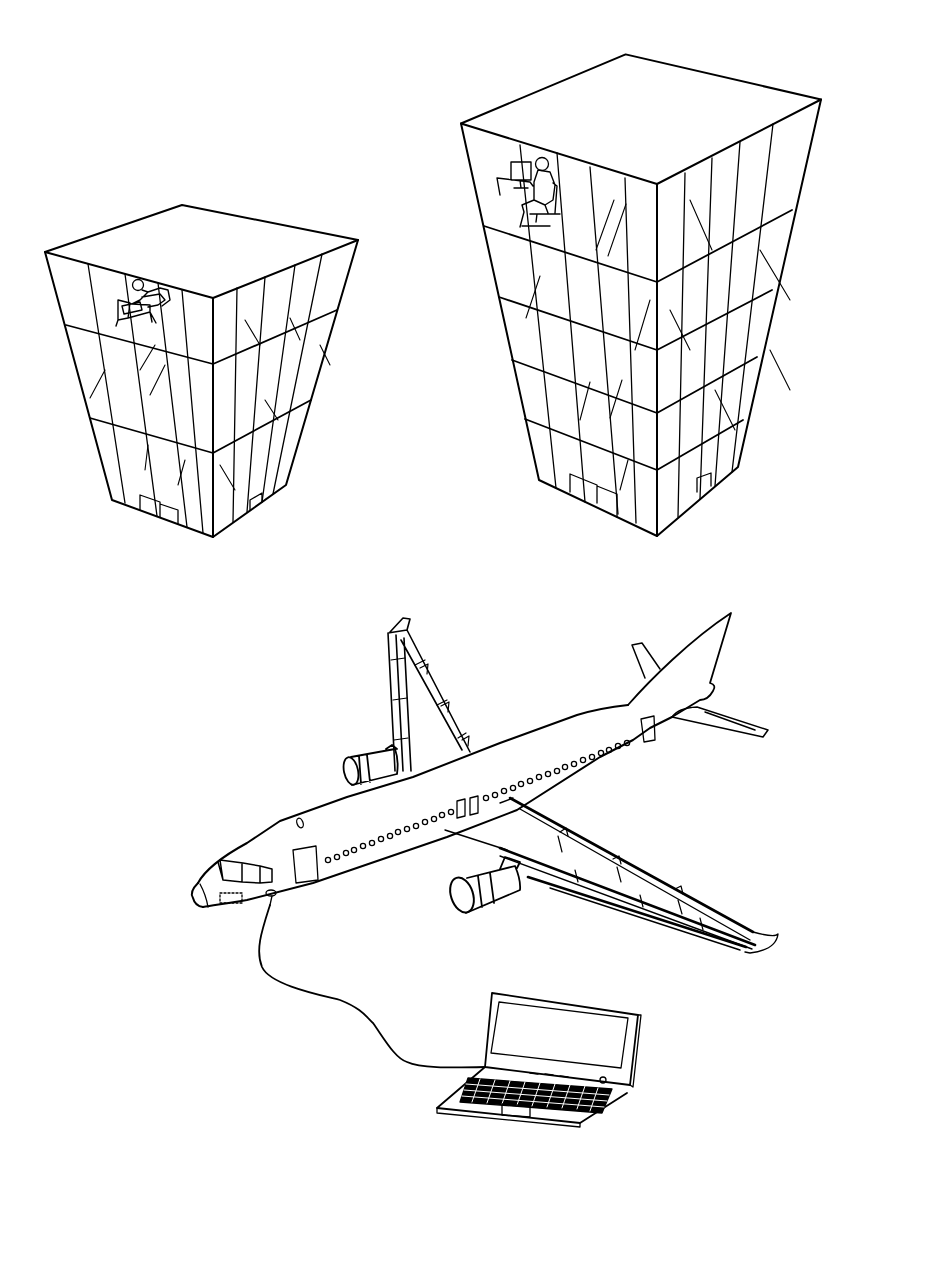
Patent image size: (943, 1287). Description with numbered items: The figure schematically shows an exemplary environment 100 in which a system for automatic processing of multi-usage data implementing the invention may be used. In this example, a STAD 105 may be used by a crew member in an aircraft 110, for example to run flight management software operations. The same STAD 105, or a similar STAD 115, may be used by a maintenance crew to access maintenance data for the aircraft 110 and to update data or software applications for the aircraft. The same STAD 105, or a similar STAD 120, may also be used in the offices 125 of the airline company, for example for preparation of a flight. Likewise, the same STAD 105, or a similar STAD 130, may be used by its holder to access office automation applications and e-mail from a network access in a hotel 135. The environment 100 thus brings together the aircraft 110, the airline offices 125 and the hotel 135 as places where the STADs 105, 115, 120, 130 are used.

The environment 100 is at (292, 84).
The STAD 105 is at (252, 860).
The aircraft 110 is at (577, 713).
The STAD 115 is at (635, 1042).
The STAD 120 is at (508, 180).
The offices of the airline company 125 is at (534, 101).
The STAD 130 is at (97, 327).
The hotel 135 is at (102, 253).